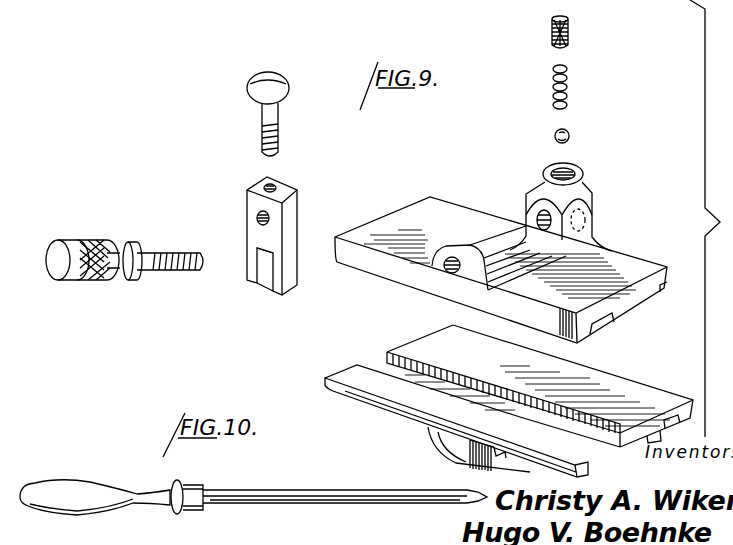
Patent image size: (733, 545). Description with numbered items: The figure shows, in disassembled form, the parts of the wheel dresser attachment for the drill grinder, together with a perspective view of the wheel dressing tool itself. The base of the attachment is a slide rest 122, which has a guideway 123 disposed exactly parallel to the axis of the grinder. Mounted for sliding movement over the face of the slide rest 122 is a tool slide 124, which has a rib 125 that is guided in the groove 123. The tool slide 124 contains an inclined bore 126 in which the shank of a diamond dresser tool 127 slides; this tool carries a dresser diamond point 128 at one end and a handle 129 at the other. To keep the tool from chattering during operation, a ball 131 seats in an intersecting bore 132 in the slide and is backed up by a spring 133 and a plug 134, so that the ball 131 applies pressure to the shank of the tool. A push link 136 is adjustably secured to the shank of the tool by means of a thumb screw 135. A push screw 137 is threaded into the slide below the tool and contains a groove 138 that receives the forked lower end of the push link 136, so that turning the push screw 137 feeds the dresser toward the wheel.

In FIG. 9, the slide rest 122 is at (390, 405).
In FIG. 9, the guideway 123 is at (382, 363).
In FIG. 9, the tool slide 124 is at (420, 210).
In FIG. 9, the rib 125 is at (607, 327).
In FIG. 9, the inclined bore 126 is at (540, 213).
In FIG. 10, the diamond dresser tool 127 is at (252, 475).
In FIG. 10, the dresser diamond point 128 is at (482, 490).
In FIG. 10, the handle 129 is at (83, 488).
In FIG. 9, the ball 131 is at (569, 135).
In FIG. 9, the intersecting bore 132 is at (583, 170).
In FIG. 9, the spring 133 is at (570, 85).
In FIG. 9, the plug 134 is at (568, 33).
In FIG. 9, the thumb screw 135 is at (278, 118).
In FIG. 9, the push link 136 is at (299, 207).
In FIG. 9, the push screw 137 is at (163, 232).
In FIG. 9, the groove 138 is at (115, 242).